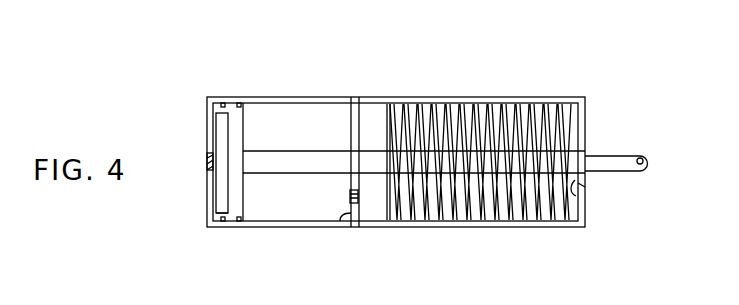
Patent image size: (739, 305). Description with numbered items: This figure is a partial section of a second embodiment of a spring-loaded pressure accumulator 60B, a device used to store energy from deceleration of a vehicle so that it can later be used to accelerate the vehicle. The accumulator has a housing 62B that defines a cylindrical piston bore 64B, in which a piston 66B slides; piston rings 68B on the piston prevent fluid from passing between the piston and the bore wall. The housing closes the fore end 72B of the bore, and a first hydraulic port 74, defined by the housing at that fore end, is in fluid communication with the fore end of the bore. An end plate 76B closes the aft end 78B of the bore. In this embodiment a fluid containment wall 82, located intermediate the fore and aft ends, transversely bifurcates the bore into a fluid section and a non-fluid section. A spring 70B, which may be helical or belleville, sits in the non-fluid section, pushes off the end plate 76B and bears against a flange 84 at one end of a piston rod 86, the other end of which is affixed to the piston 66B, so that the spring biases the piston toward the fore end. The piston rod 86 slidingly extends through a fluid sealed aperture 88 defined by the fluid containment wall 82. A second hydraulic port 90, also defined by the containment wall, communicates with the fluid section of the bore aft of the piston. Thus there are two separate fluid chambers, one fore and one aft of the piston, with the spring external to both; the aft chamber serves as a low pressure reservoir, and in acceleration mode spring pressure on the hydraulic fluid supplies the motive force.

The pressure accumulator 60B is at (305, 229).
The housing 62B is at (253, 224).
The cylindrical piston bore 64B is at (351, 216).
The piston 66B is at (236, 206).
The piston rings 68B is at (222, 103).
The spring 70B is at (456, 107).
The fore end 72B is at (219, 198).
The first hydraulic port 74 is at (208, 156).
The end plate 76B is at (583, 185).
The aft end 78B is at (572, 196).
The fluid containment wall 82 is at (353, 98).
The flange 84 is at (386, 122).
The piston rod 86 is at (307, 157).
The fluid sealed aperture 88 is at (347, 174).
The second hydraulic port 90 is at (360, 197).